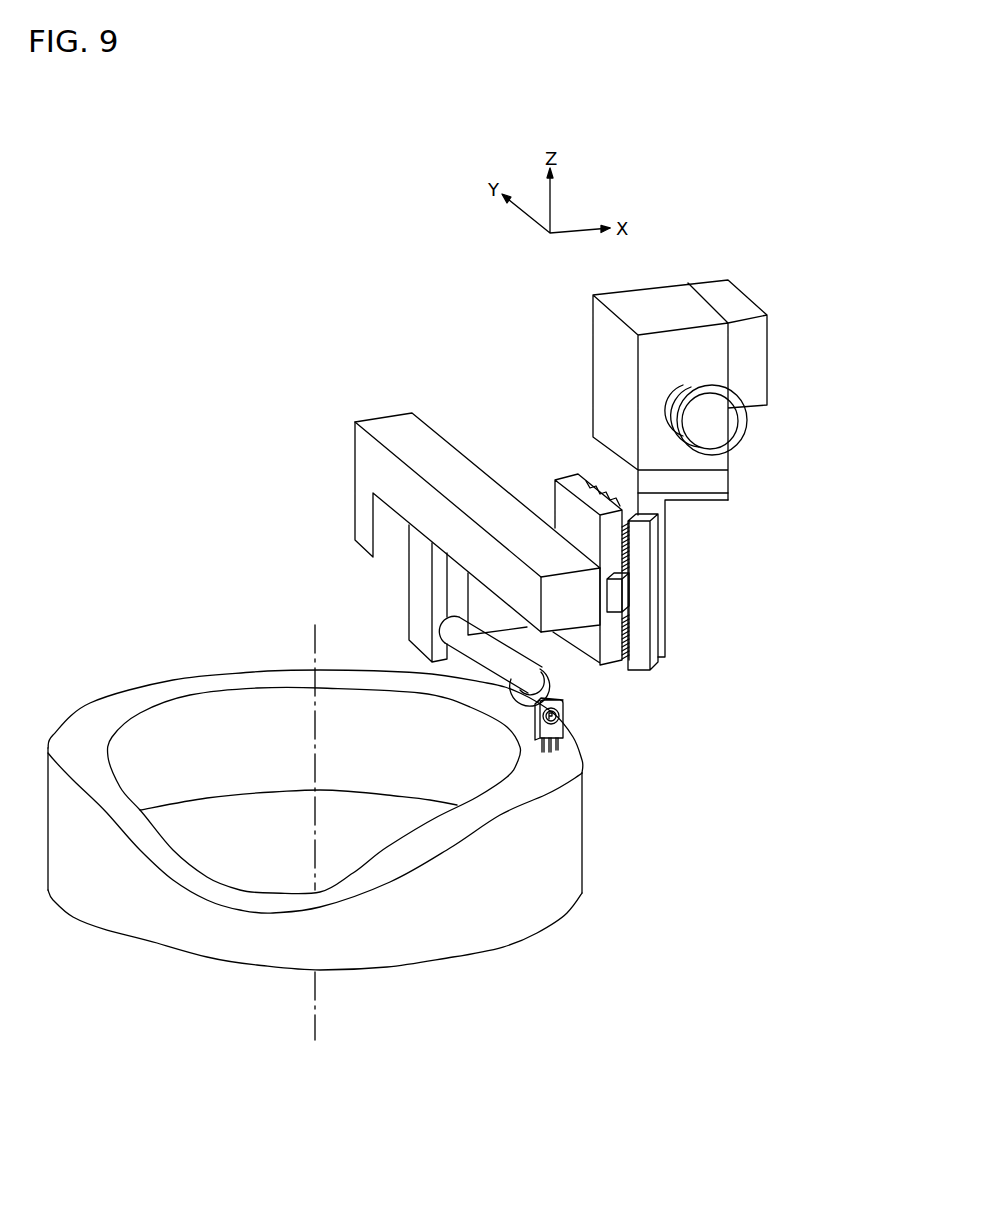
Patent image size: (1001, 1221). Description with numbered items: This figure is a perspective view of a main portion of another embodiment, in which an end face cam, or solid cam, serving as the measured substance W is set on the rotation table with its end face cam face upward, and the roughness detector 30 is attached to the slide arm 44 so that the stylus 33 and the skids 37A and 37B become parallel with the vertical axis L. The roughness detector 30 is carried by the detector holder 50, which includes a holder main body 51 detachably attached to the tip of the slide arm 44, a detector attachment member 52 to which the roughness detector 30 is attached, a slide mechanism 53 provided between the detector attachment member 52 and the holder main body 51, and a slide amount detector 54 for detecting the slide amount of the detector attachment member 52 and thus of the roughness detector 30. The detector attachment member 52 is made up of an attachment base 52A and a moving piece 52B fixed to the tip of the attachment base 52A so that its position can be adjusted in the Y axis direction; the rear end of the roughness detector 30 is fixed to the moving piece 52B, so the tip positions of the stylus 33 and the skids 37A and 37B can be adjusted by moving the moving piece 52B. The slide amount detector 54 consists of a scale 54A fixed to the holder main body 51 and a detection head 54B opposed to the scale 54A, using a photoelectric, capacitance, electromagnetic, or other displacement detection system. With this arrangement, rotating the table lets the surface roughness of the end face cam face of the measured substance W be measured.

The roughness detector 30 is at (553, 681).
The stylus 33 is at (552, 758).
The skid 37A is at (542, 752).
The skid 37B is at (560, 747).
The slide arm 44 is at (712, 286).
The detector holder 50 is at (506, 337).
The holder main body 51 is at (703, 490).
The detector attachment member 52 is at (438, 337).
The attachment base 52A is at (358, 438).
The moving piece 52B is at (420, 547).
The slide mechanism 53 is at (557, 497).
The slide amount detector 54 is at (737, 578).
The scale 54A is at (648, 643).
The detection head 54B is at (628, 597).
The measured substance W is at (430, 955).
The vertical axis L is at (312, 845).